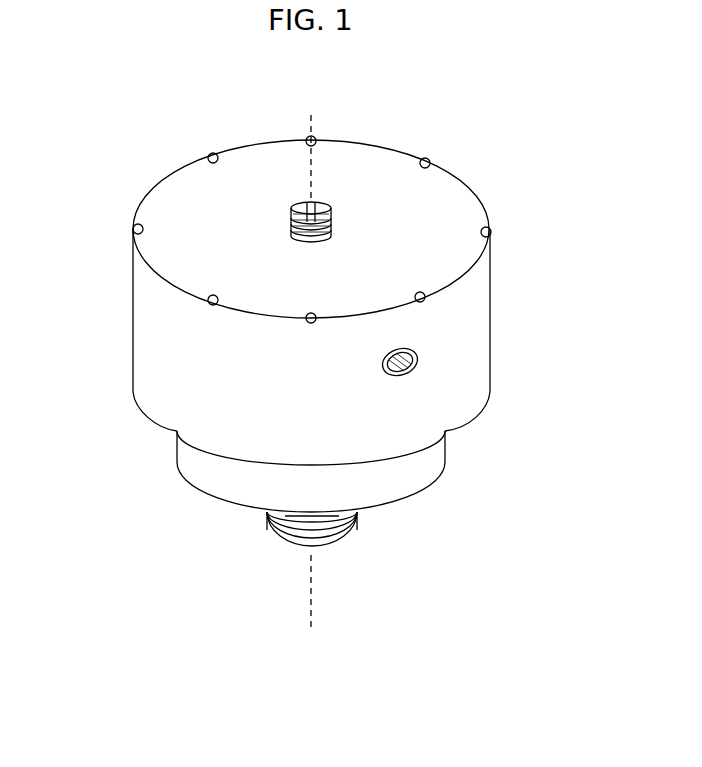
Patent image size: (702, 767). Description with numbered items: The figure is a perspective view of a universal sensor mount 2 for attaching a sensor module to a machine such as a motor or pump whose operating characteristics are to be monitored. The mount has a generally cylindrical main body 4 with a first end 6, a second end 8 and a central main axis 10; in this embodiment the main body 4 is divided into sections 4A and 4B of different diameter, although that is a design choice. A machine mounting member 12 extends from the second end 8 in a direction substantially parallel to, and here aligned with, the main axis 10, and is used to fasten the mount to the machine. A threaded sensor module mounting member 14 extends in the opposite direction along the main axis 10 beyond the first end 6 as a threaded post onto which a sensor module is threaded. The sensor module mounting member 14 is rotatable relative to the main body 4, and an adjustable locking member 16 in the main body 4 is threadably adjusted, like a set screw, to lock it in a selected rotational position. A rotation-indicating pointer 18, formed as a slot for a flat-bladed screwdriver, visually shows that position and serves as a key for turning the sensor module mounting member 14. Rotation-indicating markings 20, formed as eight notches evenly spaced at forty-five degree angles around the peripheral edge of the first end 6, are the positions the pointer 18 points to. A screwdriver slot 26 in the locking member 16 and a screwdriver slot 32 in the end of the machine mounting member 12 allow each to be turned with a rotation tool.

The universal sensor mount 2 is at (138, 189).
The main body 4 is at (162, 360).
The main body section 4A is at (490, 322).
The main body section 4B is at (445, 450).
The first end 6 is at (365, 170).
The second end 8 is at (393, 503).
The central main axis 10 is at (312, 122).
The machine mounting member 12 is at (278, 520).
The sensor module mounting member 14 is at (333, 223).
The adjustable locking member 16 is at (415, 368).
The rotation-indicating pointer 18 is at (293, 210).
The rotation-indicating markings 20 is at (420, 162).
The screwdriver slot 26 is at (390, 372).
The screwdriver slot 32 is at (312, 547).